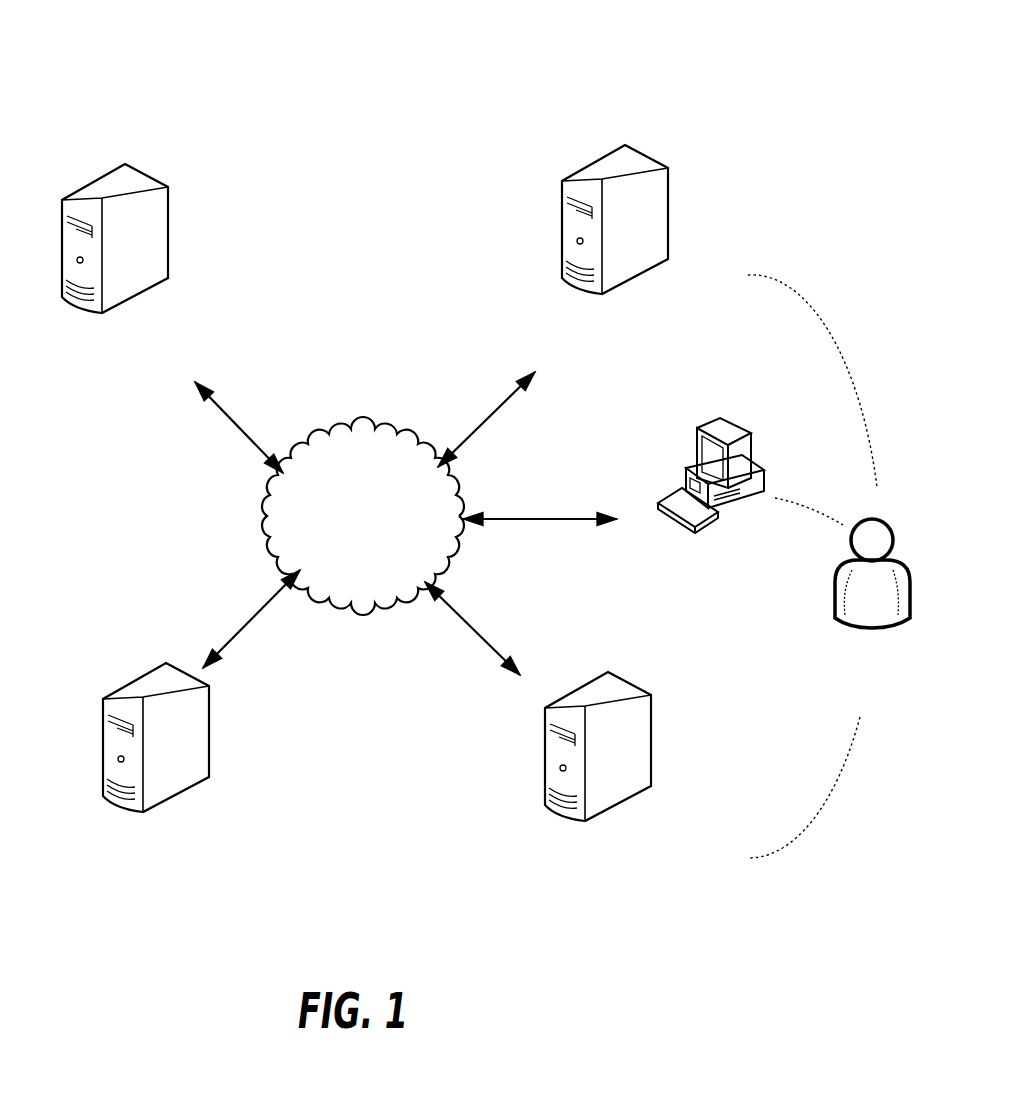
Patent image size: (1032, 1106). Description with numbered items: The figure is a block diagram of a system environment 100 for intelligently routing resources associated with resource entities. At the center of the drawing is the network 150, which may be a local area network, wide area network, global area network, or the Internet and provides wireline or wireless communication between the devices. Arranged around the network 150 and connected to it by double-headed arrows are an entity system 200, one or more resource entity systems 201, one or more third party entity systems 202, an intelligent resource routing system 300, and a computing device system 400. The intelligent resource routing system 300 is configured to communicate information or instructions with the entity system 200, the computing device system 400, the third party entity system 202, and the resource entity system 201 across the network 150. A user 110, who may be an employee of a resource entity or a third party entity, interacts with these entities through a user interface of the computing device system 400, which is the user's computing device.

The system environment 100 is at (472, 96).
The user 110 is at (853, 684).
The network 150 is at (346, 546).
The entity system 200 is at (98, 411).
The resource entity system 201 is at (597, 391).
The third party entity system 202 is at (582, 916).
The intelligent resource routing system 300 is at (141, 908).
The computing device system 400 is at (695, 652).